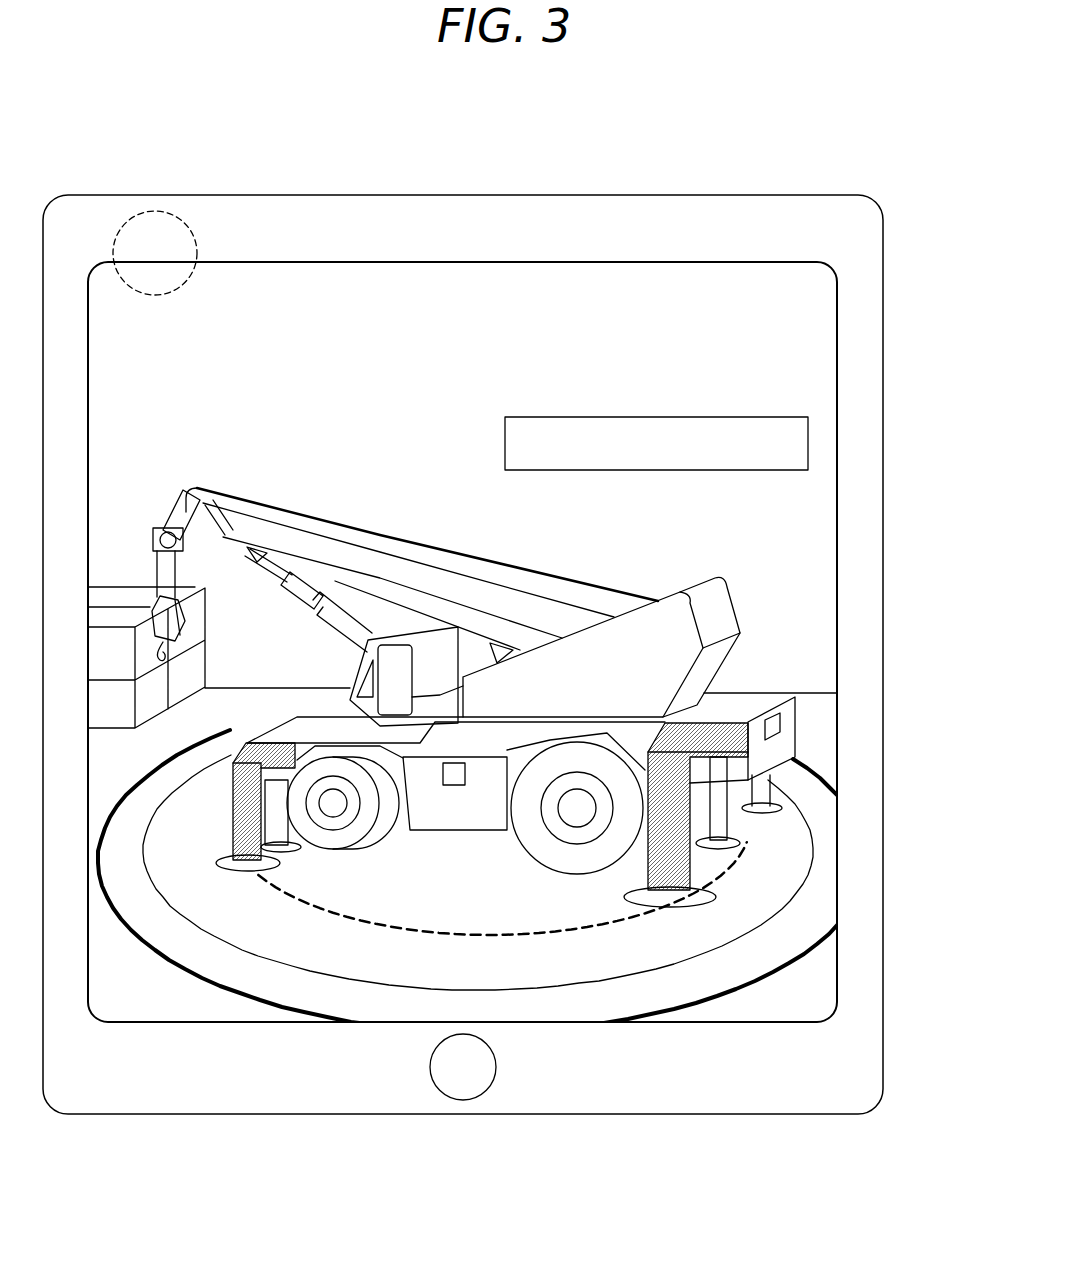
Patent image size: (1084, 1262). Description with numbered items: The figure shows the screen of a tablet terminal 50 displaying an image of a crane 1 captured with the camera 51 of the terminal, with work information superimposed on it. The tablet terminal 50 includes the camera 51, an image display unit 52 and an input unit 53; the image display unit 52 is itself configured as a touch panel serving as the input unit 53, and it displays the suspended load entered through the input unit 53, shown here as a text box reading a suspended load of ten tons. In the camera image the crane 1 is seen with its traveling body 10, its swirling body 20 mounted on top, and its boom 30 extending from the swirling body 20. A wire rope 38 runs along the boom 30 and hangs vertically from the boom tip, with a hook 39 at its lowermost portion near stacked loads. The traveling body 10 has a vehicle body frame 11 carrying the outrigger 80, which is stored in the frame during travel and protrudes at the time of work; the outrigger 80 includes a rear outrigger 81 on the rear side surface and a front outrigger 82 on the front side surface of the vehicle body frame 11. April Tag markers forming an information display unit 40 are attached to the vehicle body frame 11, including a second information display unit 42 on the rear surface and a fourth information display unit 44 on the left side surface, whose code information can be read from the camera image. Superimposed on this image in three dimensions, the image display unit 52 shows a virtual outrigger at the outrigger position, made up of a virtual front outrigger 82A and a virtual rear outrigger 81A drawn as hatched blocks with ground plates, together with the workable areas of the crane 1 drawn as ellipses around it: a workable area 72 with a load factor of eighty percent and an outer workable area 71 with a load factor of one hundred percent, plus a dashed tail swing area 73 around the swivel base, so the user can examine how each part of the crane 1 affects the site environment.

The crane 1 is at (506, 544).
The traveling body 10 is at (497, 811).
The vehicle body frame 11 is at (442, 818).
The swirling body 20 is at (717, 558).
The boom 30 is at (335, 530).
The wire rope 38 is at (177, 573).
The hook 39 is at (190, 627).
The information display unit 40 is at (703, 806).
The second information display unit 42 is at (773, 728).
The fourth information display unit 44 is at (455, 775).
The tablet terminal 50 is at (418, 186).
The camera 51 is at (197, 243).
The image display unit 52 is at (592, 350).
The input unit 53 is at (656, 443).
The workable area 71 is at (110, 878).
The workable area 72 is at (173, 893).
The tail swing area 73 is at (385, 931).
The outrigger 80 is at (500, 900).
The rear outrigger 81 is at (721, 812).
The virtual rear outrigger 81A is at (638, 869).
The front outrigger 82 is at (287, 826).
The virtual front outrigger 82A is at (226, 832).